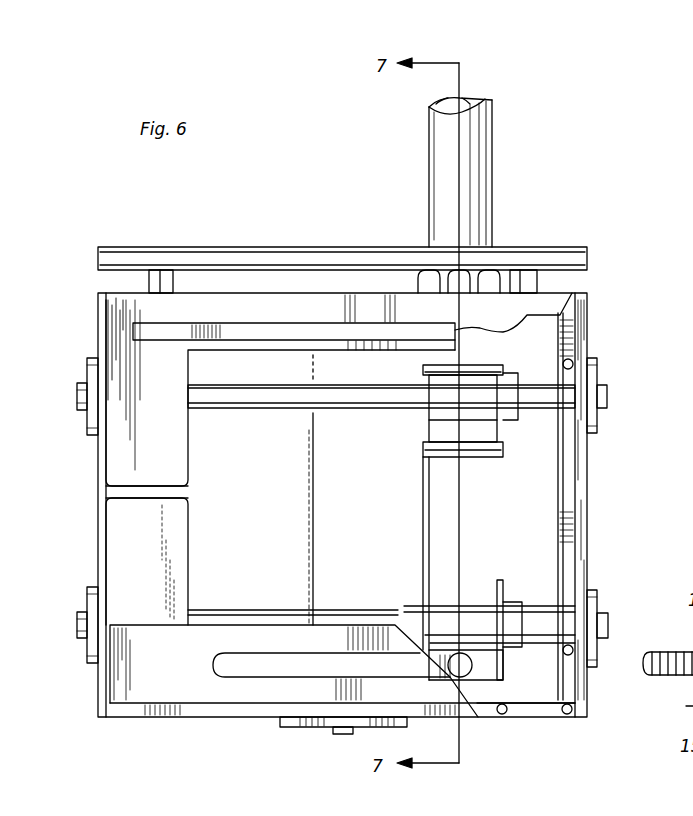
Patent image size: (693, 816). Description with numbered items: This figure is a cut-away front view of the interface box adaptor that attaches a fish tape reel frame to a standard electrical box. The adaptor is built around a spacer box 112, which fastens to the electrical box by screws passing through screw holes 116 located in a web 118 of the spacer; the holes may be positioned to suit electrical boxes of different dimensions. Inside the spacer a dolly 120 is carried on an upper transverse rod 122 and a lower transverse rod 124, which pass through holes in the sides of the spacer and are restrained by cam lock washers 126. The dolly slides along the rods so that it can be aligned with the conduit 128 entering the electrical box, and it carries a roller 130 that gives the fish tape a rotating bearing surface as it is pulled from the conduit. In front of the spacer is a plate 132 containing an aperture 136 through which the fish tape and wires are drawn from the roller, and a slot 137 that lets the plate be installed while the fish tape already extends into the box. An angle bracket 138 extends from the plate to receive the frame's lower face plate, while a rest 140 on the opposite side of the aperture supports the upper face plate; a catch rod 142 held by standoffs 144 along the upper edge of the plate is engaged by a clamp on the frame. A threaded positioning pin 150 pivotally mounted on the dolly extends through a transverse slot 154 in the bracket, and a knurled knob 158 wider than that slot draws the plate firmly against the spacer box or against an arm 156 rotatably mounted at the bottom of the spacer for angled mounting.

The spacer box 112 is at (587, 455).
The screw holes 116 is at (567, 718).
The web 118 is at (530, 700).
The dolly 120 is at (420, 483).
The upper transverse rod 122 is at (310, 413).
The lower transverse rod 124 is at (282, 580).
The cam lock washers 126 is at (90, 360).
The conduit 128 is at (492, 173).
The roller 130 is at (490, 455).
The plate 132 is at (125, 455).
The aperture 136 is at (187, 537).
The slot 137 is at (122, 500).
The angle bracket 138 is at (125, 677).
The rest 140 is at (148, 322).
The catch rod 142 is at (297, 215).
The standoffs 144 is at (175, 280).
The positioning pin 150 is at (667, 650).
The transverse slot 154 is at (233, 680).
The arm 156 is at (280, 720).
The knurled knob 158 is at (692, 708).